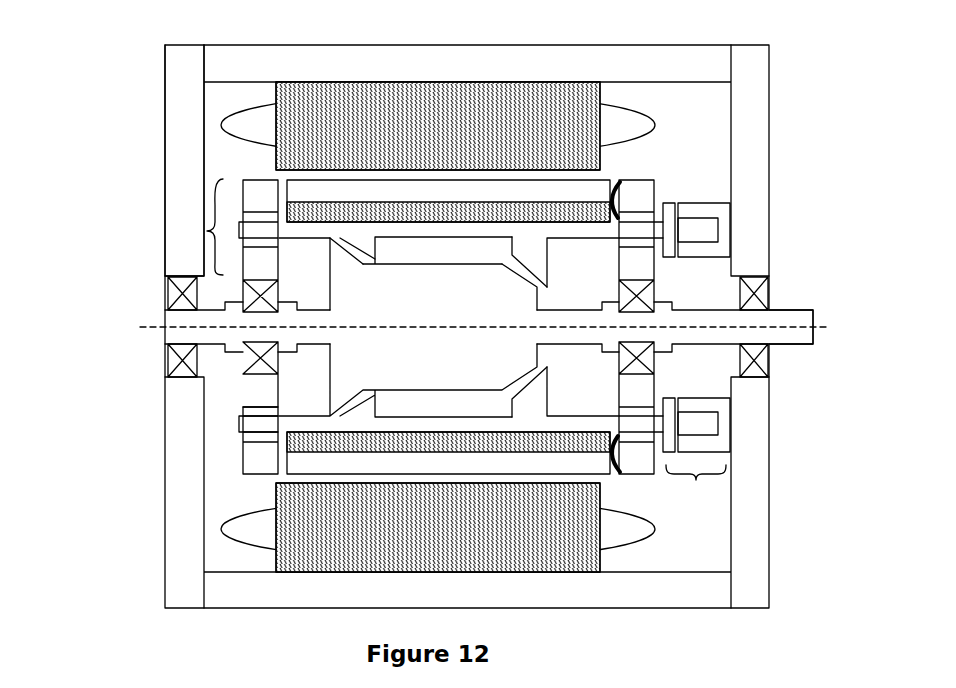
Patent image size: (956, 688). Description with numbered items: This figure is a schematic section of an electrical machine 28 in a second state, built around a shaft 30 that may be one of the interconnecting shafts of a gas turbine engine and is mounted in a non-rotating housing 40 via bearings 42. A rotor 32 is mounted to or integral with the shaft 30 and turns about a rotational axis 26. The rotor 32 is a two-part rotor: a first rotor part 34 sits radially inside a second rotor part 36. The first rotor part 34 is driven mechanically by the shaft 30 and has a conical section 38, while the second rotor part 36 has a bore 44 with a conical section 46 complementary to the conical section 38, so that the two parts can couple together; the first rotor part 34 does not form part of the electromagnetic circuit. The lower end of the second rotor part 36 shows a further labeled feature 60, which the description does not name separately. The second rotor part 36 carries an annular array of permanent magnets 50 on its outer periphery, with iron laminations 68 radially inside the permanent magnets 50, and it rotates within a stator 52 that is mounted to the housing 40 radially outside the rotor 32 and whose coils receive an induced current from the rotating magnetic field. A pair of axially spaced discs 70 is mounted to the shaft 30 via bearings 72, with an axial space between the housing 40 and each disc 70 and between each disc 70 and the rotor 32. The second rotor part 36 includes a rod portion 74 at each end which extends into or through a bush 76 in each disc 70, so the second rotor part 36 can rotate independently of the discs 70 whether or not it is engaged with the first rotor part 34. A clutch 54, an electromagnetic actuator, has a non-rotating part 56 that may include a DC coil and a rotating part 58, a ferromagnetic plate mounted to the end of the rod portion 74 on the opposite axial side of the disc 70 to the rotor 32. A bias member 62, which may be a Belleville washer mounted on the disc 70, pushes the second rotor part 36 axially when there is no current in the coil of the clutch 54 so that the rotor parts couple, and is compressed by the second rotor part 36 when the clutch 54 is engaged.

The rotational axis 26 is at (780, 329).
The electrical machine 28 is at (97, 78).
The shaft 30 is at (183, 335).
The rotor 32 is at (222, 245).
The first rotor part 34 is at (449, 381).
The second rotor part 36 is at (449, 272).
The conical section 38 is at (345, 262).
The housing 40 is at (165, 158).
The bearings 42 is at (168, 292).
The bore 44 is at (450, 242).
The conical section 46 is at (352, 243).
The permanent magnets 50 is at (550, 185).
The stator 52 is at (380, 105).
The clutch 54 is at (696, 454).
The non-rotating part 56 is at (740, 230).
The rotating part 58 is at (669, 206).
The rotor flange 60 is at (506, 390).
The bias member 62 is at (614, 192).
The iron laminations 68 is at (350, 212).
The discs 70 is at (260, 455).
The bearings 72 is at (260, 370).
The rod portion 74 is at (253, 423).
The bush 76 is at (272, 410).